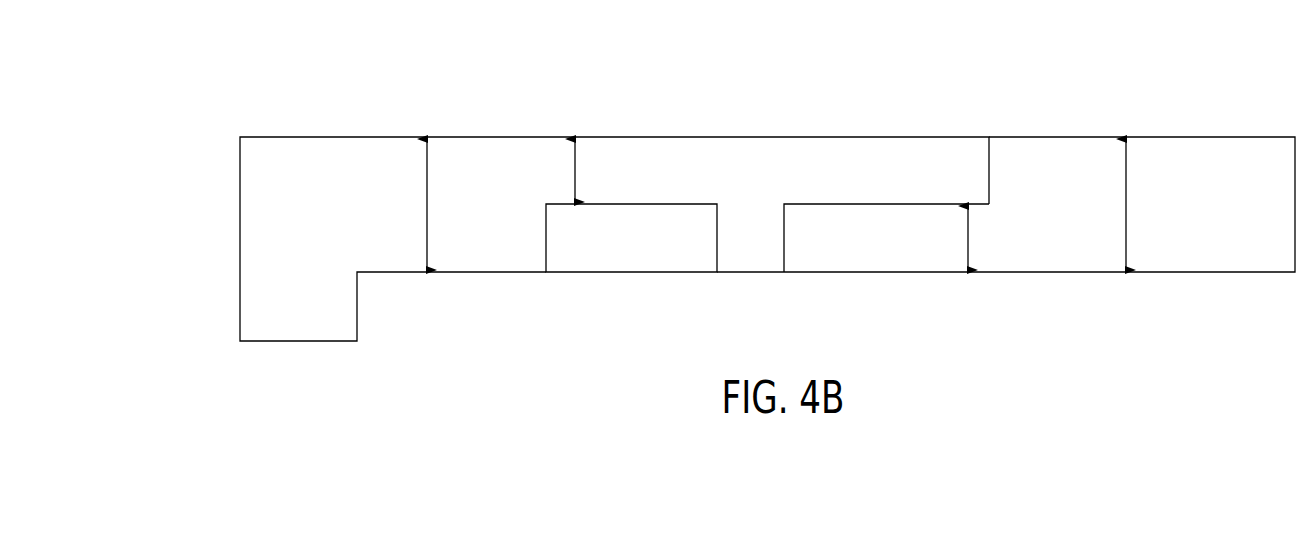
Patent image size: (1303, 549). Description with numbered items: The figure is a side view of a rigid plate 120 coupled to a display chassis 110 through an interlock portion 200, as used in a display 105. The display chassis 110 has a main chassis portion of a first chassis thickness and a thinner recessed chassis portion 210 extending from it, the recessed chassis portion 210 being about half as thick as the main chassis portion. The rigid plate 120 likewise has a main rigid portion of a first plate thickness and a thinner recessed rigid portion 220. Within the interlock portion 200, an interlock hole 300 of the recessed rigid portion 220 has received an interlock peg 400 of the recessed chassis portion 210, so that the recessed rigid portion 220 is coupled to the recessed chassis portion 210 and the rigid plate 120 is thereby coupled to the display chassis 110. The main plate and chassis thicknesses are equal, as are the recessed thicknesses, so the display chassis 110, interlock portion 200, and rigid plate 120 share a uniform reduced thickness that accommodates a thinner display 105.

The display 105 is at (316, 66).
The display chassis 110 is at (307, 215).
The rigid plate 120 is at (1195, 215).
The interlock portion 200 is at (989, 130).
The recessed chassis portion 210 is at (733, 179).
The recessed rigid portion 220 is at (615, 248).
The interlock hole 300 is at (750, 274).
The interlock peg 400 is at (733, 248).